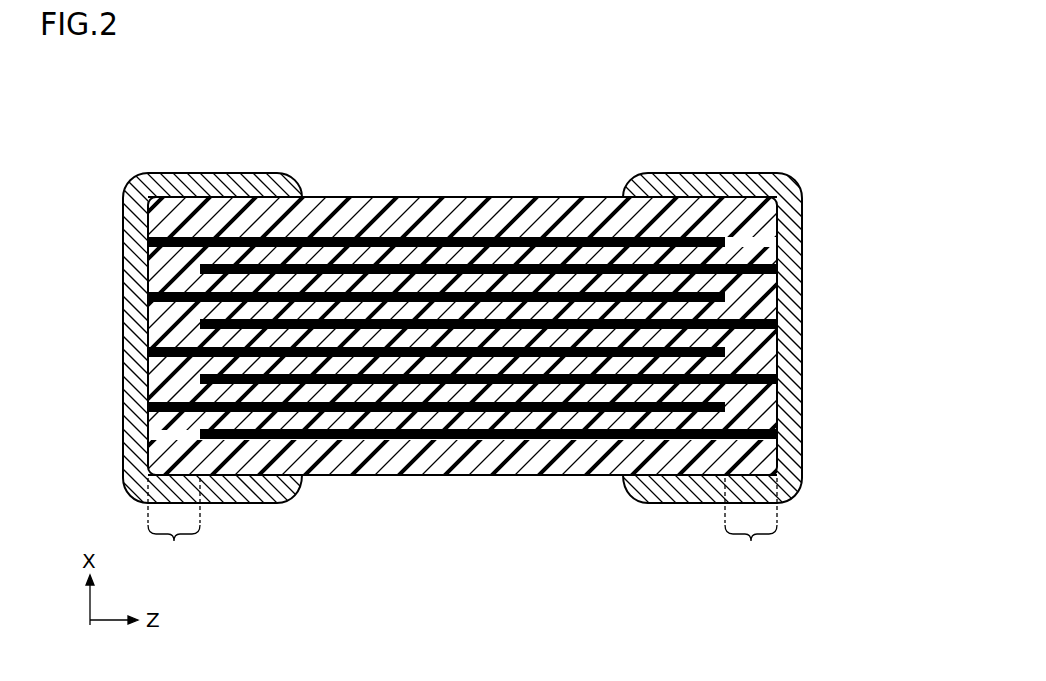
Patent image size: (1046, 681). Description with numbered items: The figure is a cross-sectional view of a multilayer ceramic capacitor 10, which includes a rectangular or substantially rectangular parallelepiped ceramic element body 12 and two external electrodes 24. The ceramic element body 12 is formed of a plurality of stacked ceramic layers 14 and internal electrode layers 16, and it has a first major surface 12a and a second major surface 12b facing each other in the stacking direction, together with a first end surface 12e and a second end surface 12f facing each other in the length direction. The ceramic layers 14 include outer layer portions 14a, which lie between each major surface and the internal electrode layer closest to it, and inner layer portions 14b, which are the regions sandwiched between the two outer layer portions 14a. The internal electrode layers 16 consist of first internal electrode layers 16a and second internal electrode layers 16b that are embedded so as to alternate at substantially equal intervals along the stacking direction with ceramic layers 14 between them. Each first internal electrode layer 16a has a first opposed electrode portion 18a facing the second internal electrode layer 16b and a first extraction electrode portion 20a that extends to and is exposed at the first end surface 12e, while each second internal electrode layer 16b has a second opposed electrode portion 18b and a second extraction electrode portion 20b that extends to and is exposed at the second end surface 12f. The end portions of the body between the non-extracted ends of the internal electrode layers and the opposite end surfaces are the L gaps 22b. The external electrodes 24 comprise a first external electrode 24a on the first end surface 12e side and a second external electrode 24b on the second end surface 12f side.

The multilayer ceramic capacitor 10 is at (108, 151).
The ceramic element body 12 is at (597, 197).
The first major surface 12a is at (569, 195).
The second major surface 12b is at (593, 477).
The first end surface 12e is at (147, 317).
The second end surface 12f is at (779, 343).
The ceramic layers 14 is at (523, 334).
The outer layer portions 14a is at (477, 222).
The inner layer portions 14b is at (545, 310).
The internal electrode layers 16 is at (462, 372).
The first internal electrode layers 16a is at (317, 292).
The second internal electrode layers 16b is at (362, 318).
The first opposed electrode portion 18a is at (387, 291).
The second opposed electrode portion 18b is at (432, 318).
The first extraction electrode portion 20a is at (165, 294).
The second extraction electrode portion 20b is at (758, 319).
The L gaps 22b is at (462, 528).
The external electrodes 24 is at (523, 362).
The first external electrode 24a is at (198, 173).
The second external electrode 24b is at (704, 173).